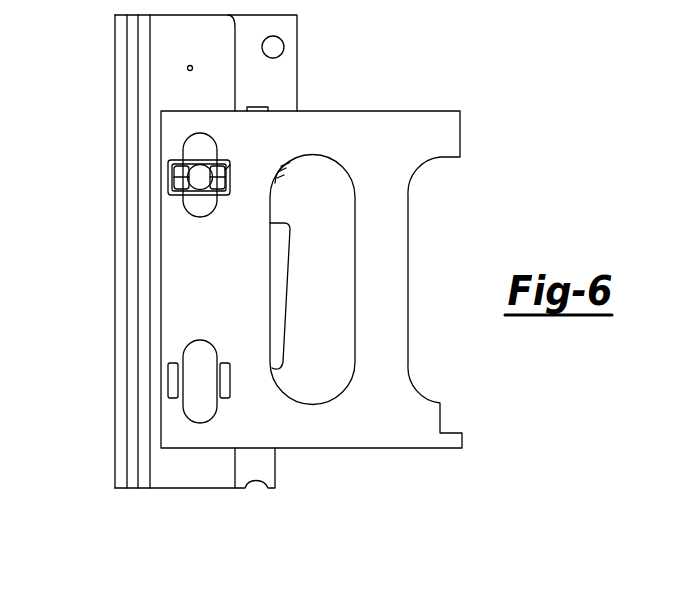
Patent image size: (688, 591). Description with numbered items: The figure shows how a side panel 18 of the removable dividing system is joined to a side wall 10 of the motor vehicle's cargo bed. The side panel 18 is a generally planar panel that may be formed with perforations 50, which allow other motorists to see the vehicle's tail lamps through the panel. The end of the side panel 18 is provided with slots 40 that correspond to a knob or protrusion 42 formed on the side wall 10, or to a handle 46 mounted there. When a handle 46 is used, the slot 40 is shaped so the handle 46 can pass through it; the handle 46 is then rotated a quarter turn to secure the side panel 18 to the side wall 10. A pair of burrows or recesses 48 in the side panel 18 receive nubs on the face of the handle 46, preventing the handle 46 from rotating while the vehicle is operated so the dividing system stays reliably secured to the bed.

The side wall 10 is at (172, 50).
The side panel 18 is at (365, 157).
The slot 40 is at (202, 217).
The protrusion 42 is at (190, 178).
The handle 46 is at (225, 170).
The recesses 48 is at (225, 398).
The perforations 50 is at (340, 275).